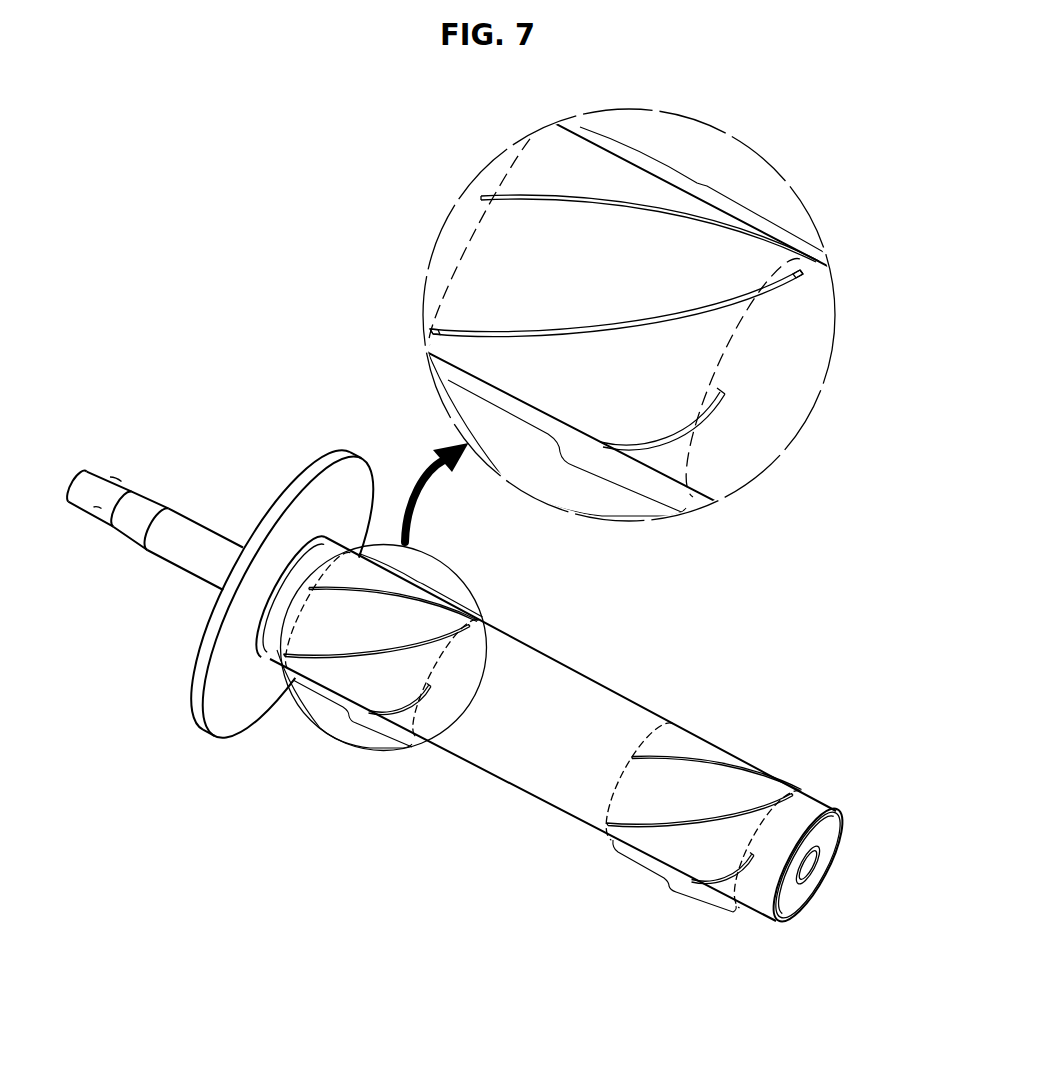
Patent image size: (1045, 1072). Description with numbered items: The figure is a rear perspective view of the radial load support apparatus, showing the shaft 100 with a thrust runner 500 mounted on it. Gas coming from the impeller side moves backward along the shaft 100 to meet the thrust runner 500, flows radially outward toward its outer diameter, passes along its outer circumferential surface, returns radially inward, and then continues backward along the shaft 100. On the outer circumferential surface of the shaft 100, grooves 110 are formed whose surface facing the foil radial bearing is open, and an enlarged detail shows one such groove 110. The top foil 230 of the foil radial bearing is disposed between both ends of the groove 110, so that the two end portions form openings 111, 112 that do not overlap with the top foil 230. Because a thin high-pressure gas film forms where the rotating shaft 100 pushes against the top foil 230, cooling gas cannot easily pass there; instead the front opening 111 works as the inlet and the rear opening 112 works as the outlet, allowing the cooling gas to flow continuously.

The shaft 100 is at (528, 766).
The groove 110 is at (700, 817).
The front opening 111 is at (430, 328).
The rear opening 112 is at (806, 276).
The top foil 230 is at (705, 183).
The thrust runner 500 is at (214, 718).